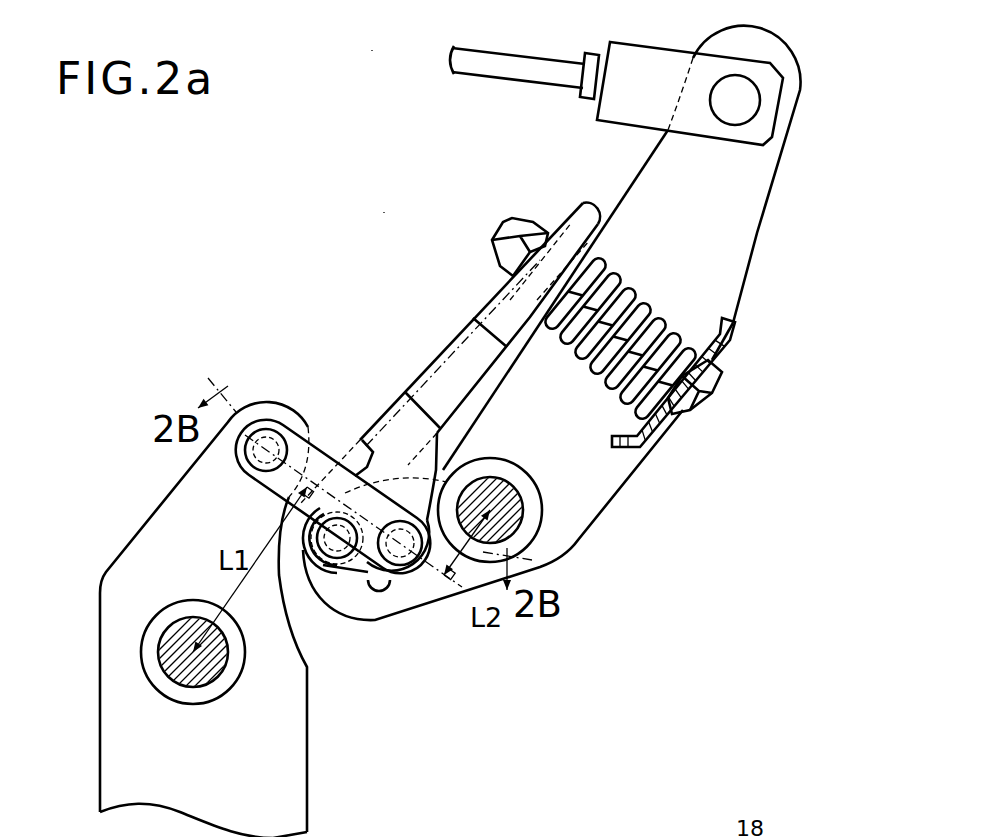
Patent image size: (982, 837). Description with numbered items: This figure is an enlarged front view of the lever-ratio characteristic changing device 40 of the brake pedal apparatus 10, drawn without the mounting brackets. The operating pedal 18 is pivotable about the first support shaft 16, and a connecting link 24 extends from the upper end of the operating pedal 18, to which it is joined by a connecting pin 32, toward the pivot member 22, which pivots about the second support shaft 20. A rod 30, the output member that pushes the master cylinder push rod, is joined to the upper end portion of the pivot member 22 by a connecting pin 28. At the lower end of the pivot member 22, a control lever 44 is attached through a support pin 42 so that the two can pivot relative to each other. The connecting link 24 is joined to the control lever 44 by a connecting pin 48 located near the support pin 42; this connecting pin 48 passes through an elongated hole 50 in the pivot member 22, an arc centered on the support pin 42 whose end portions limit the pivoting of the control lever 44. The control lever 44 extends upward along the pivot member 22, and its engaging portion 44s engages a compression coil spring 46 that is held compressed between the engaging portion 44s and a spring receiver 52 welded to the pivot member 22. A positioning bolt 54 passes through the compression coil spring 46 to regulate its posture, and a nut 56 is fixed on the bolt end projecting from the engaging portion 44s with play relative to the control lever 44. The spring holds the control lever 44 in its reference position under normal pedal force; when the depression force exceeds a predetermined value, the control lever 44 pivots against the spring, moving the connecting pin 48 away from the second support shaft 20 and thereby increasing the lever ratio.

The brake pedal apparatus 10 is at (390, 110).
The first support shaft 16 is at (177, 664).
The operating pedal 18 is at (287, 785).
The second support shaft 20 is at (512, 510).
The pivot member 22 is at (740, 232).
The connecting link 24 is at (328, 457).
The connecting pin 28 is at (745, 100).
The rod 30 is at (510, 62).
The connecting pin 32 is at (267, 445).
The lever-ratio characteristic changing device 40 is at (418, 268).
The support pin 42 is at (324, 554).
The control lever 44 is at (453, 362).
The engaging portion 44s is at (545, 258).
The compression coil spring 46 is at (630, 290).
The connecting pin 48 is at (401, 568).
The elongated hole 50 is at (373, 592).
The spring receiver 52 is at (722, 360).
The positioning bolt 54 is at (695, 404).
The nut 56 is at (497, 272).